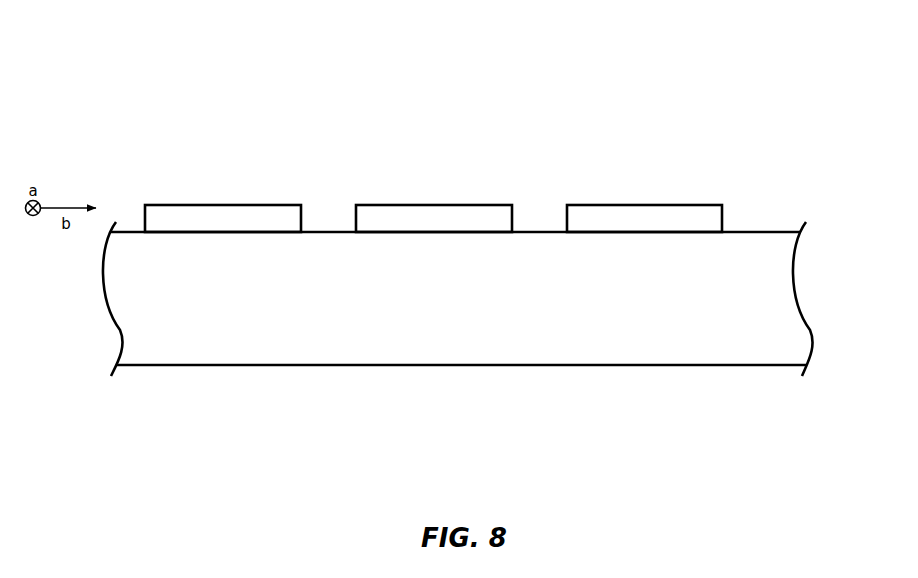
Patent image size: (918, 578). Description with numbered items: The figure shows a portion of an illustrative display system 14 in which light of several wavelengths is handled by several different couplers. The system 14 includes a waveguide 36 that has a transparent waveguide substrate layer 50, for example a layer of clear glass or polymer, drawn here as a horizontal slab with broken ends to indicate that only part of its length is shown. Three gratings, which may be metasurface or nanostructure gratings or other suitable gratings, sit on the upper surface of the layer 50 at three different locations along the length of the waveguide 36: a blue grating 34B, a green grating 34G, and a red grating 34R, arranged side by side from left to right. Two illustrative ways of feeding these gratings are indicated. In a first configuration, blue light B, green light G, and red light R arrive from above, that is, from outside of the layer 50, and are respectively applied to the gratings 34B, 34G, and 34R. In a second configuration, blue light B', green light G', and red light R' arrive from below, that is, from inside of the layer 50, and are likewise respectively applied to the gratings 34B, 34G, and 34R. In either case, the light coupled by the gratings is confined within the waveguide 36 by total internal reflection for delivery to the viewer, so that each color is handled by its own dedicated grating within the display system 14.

The display system 14 is at (778, 88).
The waveguide 36 is at (827, 198).
The waveguide substrate layer 50 is at (487, 263).
The blue grating 34B is at (180, 204).
The green grating 34G is at (388, 204).
The red grating 34R is at (598, 204).
The blue light B is at (239, 149).
The green light G is at (454, 150).
The red light R is at (663, 149).
The blue light B' is at (265, 419).
The green light G' is at (466, 419).
The red light R' is at (675, 419).